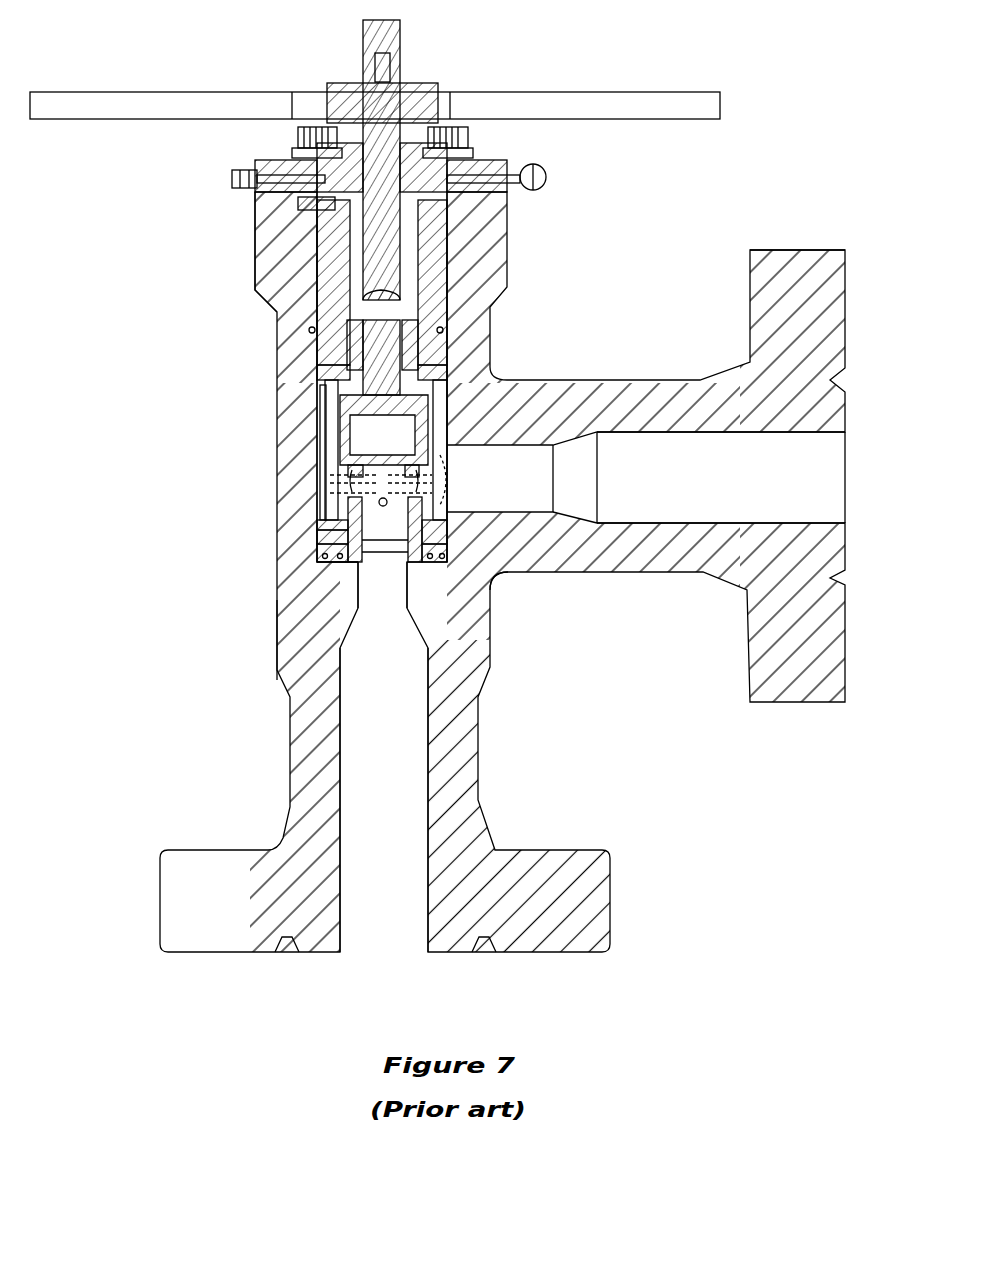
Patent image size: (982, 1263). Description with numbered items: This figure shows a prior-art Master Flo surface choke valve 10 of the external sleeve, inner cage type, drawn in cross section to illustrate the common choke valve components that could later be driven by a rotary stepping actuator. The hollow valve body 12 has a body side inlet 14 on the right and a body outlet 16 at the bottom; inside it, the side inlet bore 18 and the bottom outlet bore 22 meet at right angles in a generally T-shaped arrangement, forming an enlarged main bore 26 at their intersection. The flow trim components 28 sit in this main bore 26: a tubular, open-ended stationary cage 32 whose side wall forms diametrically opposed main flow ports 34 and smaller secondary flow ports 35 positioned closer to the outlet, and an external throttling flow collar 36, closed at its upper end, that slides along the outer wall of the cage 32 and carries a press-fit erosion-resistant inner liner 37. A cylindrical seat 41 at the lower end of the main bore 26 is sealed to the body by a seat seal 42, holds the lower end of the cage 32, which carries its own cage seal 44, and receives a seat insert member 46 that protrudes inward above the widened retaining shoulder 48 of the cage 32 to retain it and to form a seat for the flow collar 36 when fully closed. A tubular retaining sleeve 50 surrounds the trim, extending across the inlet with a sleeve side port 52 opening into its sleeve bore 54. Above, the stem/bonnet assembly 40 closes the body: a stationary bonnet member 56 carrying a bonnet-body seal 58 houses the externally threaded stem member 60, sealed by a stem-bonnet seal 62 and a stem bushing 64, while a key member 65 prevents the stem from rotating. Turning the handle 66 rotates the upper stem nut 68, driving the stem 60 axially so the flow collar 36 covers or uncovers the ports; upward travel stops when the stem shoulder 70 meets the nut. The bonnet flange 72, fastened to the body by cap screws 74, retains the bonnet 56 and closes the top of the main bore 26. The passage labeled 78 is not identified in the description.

The choke valve 10 is at (622, 275).
The hollow valve body 12 is at (480, 776).
The body side inlet 14 is at (806, 523).
The body outlet 16 is at (342, 876).
The side inlet bore 18 is at (632, 523).
The bottom outlet bore 22 is at (342, 718).
The main bore 26 is at (496, 383).
The flow trim components 28 is at (447, 472).
The stationary cage component 32 is at (455, 562).
The main flow ports 34 is at (389, 462).
The secondary flow ports 35 is at (387, 506).
The flow collar 36 is at (545, 400).
The inner liner 37 is at (356, 440).
The stem/bonnet assembly 40 is at (470, 277).
The cylindrical seat 41 is at (320, 538).
The seat seal 42 is at (345, 566).
The cage seal 44 is at (348, 576).
The seat insert member 46 is at (322, 516).
The retaining shoulder 48 is at (330, 560).
The tubular retaining sleeve 50 is at (322, 458).
The sleeve side port 52 is at (455, 505).
The sleeve bore 54 is at (323, 418).
The bonnet member 56 is at (325, 290).
The bonnet-body seal 58 is at (310, 330).
The stem member 60 is at (462, 138).
The stem-bonnet seal 62 is at (445, 330).
The stem bushing 64 is at (425, 345).
The key member 65 is at (445, 200).
The handle 66 is at (520, 92).
The upper stem nut 68 is at (320, 180).
The stem shoulder 70 is at (330, 212).
The bonnet flange 72 is at (255, 194).
The cap screws 74 is at (312, 128).
The body passage 78 is at (407, 570).